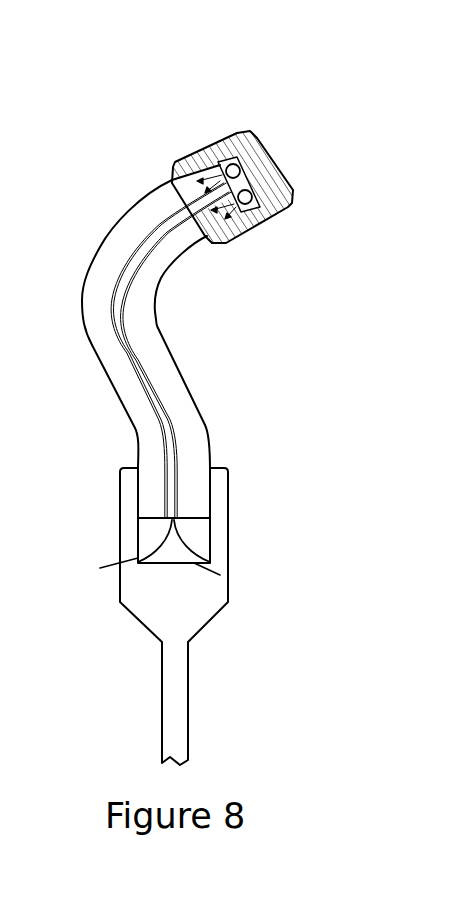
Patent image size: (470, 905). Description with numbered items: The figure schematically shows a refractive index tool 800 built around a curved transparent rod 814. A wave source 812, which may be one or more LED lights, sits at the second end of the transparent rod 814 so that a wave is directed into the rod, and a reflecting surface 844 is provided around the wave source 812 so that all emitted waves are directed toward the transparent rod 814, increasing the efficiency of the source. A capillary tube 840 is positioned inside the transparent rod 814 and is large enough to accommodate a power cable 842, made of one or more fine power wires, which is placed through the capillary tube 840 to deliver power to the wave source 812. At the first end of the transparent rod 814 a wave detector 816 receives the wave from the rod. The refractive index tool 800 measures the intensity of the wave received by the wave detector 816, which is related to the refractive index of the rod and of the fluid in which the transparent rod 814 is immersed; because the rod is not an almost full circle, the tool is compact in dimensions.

The refractive index tool 800 is at (212, 118).
The reflecting surface 844 is at (248, 148).
The wave source 812 is at (252, 197).
The transparent rod 814 is at (92, 248).
The capillary tube 840 is at (124, 333).
The power cable 842 is at (152, 385).
The wave detector 816 is at (210, 537).